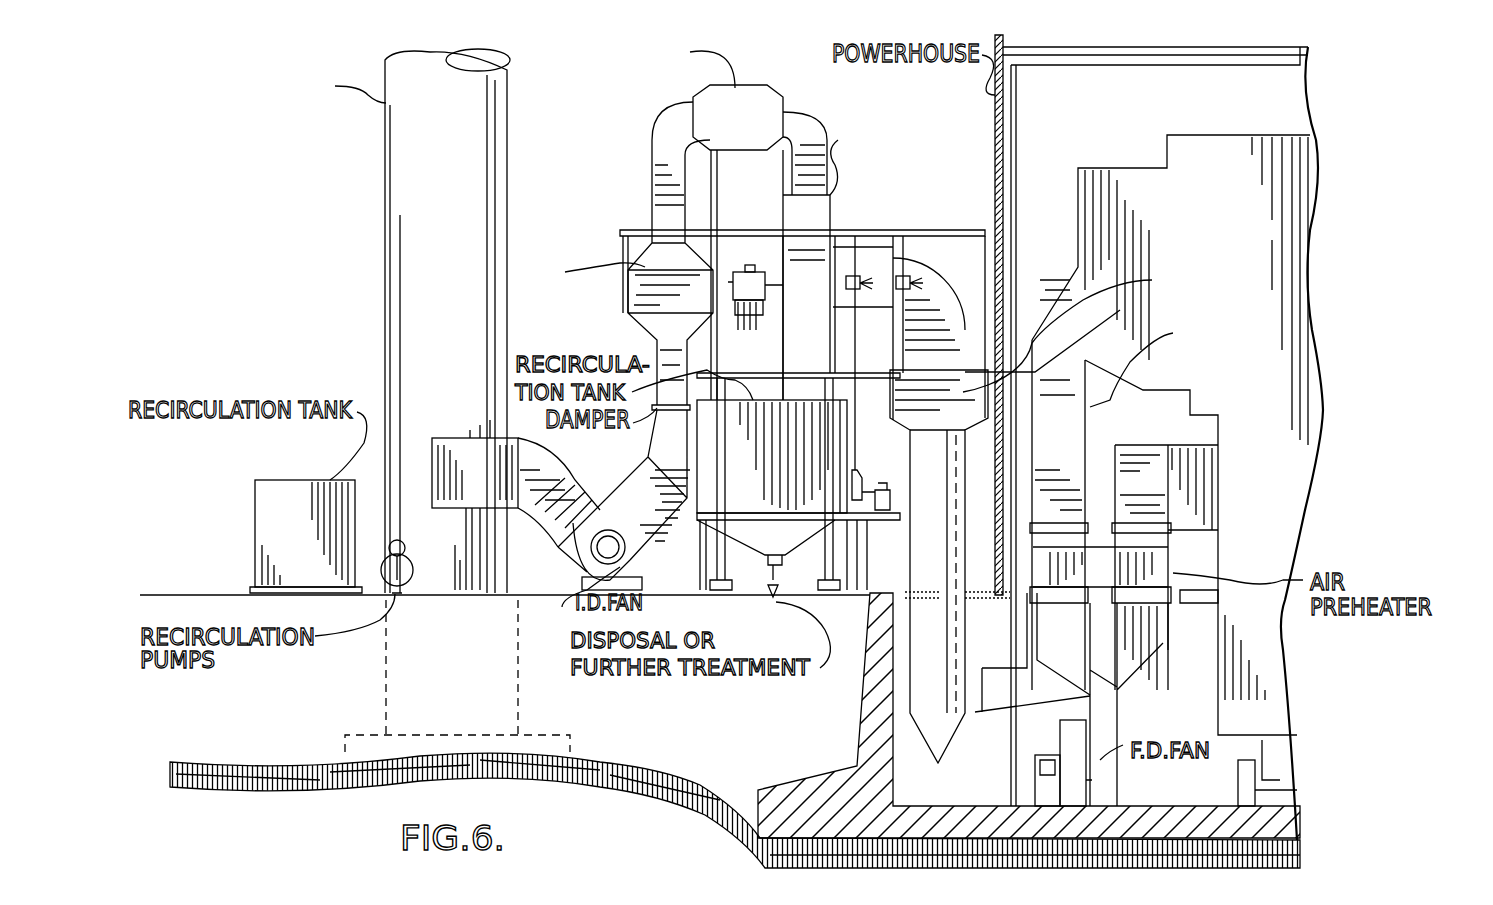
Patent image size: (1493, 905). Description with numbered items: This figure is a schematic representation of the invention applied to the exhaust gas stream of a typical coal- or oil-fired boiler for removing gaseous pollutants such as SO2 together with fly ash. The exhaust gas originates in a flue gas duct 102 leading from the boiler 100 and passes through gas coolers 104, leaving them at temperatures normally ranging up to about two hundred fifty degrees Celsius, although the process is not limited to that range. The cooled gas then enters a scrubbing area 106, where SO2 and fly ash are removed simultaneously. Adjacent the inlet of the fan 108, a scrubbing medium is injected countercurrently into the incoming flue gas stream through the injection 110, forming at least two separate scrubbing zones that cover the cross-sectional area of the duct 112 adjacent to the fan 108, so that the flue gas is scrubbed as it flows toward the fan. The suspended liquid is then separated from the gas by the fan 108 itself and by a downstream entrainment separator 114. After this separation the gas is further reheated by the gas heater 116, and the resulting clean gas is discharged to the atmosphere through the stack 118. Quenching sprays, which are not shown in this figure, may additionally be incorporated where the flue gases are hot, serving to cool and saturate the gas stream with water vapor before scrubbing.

The boiler 100 is at (1176, 443).
The flue gas duct 102 is at (1090, 444).
The gas coolers 104 is at (1084, 515).
The scrubbing area 106 is at (940, 250).
The fan 108 is at (830, 203).
The injection 110 is at (853, 270).
The duct 112 is at (845, 320).
The entrainment separator 114 is at (675, 220).
The gas heater 116 is at (616, 323).
The stack 118 is at (392, 196).